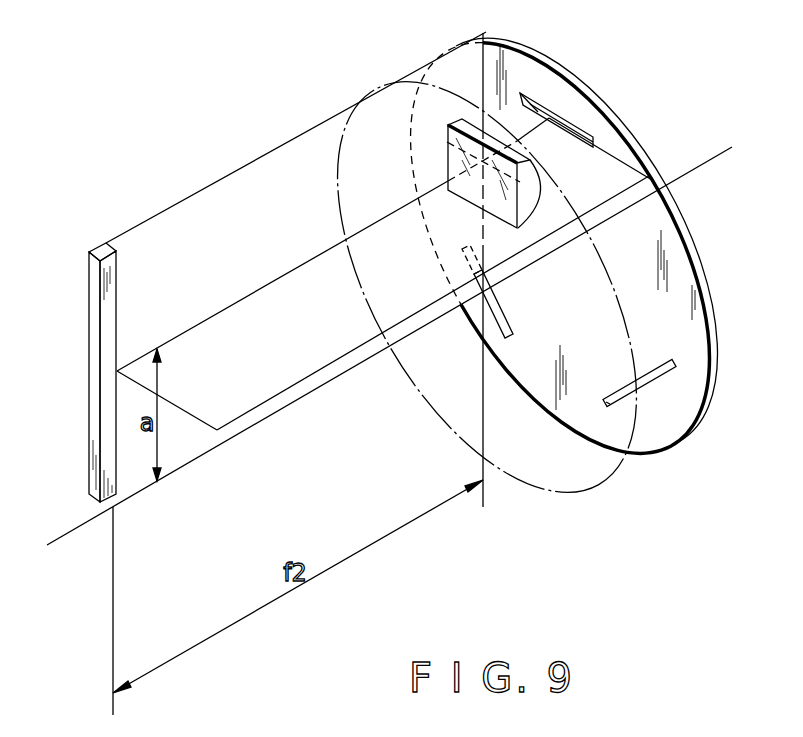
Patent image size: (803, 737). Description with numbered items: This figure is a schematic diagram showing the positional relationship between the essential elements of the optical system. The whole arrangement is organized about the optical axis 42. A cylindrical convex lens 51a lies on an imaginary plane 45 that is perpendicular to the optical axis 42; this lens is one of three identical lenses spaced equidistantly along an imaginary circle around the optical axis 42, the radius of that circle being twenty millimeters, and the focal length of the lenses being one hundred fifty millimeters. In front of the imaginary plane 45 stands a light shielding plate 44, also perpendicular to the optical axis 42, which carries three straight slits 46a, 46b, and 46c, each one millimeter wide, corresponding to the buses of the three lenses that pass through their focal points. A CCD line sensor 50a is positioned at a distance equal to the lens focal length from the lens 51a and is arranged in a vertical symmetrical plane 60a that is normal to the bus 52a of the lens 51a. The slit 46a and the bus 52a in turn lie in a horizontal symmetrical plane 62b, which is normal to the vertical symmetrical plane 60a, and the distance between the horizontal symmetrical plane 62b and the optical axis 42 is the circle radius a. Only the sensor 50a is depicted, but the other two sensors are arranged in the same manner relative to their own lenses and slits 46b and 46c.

The optical axis 42 is at (67, 532).
The light shielding plate 44 is at (680, 440).
The imaginary plane 45 is at (573, 492).
The straight slit 46a is at (533, 103).
The straight slit 46b is at (665, 362).
The straight slit 46c is at (519, 328).
The CCD line sensor 50a is at (97, 297).
The cylindrical convex lens 51a is at (463, 188).
The bus 52a is at (449, 178).
The vertical symmetrical plane 60a is at (270, 168).
The horizontal symmetrical plane 62b is at (262, 380).